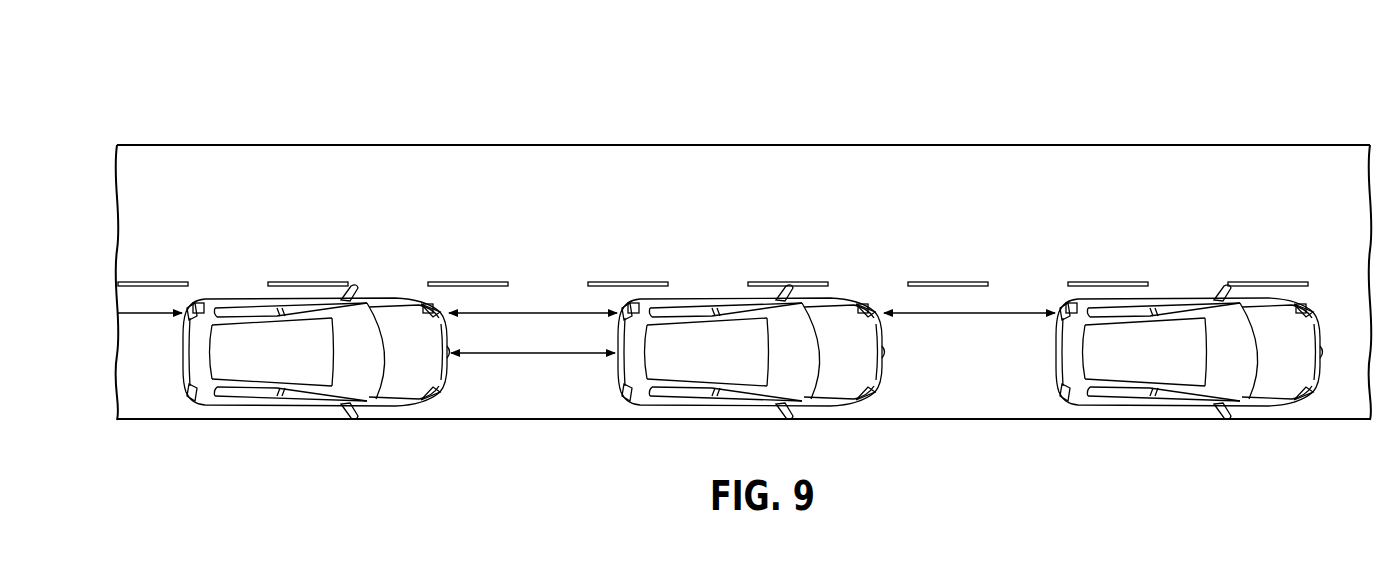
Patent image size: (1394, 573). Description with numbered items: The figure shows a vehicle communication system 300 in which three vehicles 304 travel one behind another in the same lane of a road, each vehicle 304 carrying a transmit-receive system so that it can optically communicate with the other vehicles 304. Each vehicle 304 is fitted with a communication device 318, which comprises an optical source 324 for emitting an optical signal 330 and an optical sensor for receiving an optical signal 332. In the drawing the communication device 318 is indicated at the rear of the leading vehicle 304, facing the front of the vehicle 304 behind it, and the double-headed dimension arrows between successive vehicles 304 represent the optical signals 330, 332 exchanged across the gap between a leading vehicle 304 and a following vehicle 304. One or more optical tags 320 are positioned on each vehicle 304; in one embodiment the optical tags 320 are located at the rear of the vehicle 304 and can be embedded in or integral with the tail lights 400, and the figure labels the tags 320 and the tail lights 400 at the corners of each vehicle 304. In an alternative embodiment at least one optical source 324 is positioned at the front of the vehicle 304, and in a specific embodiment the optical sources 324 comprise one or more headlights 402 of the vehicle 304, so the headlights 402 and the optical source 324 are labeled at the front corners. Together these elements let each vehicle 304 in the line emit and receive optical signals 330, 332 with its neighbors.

The vehicle communication system 300 is at (198, 94).
The vehicle 304 is at (302, 410).
The communication device 318 is at (450, 355).
The optical tag 320 is at (186, 307).
The optical source 324 is at (436, 311).
The optical signal 330 is at (153, 315).
The optical signal 332 is at (526, 310).
The tail light 400 is at (201, 303).
The headlight 402 is at (428, 309).